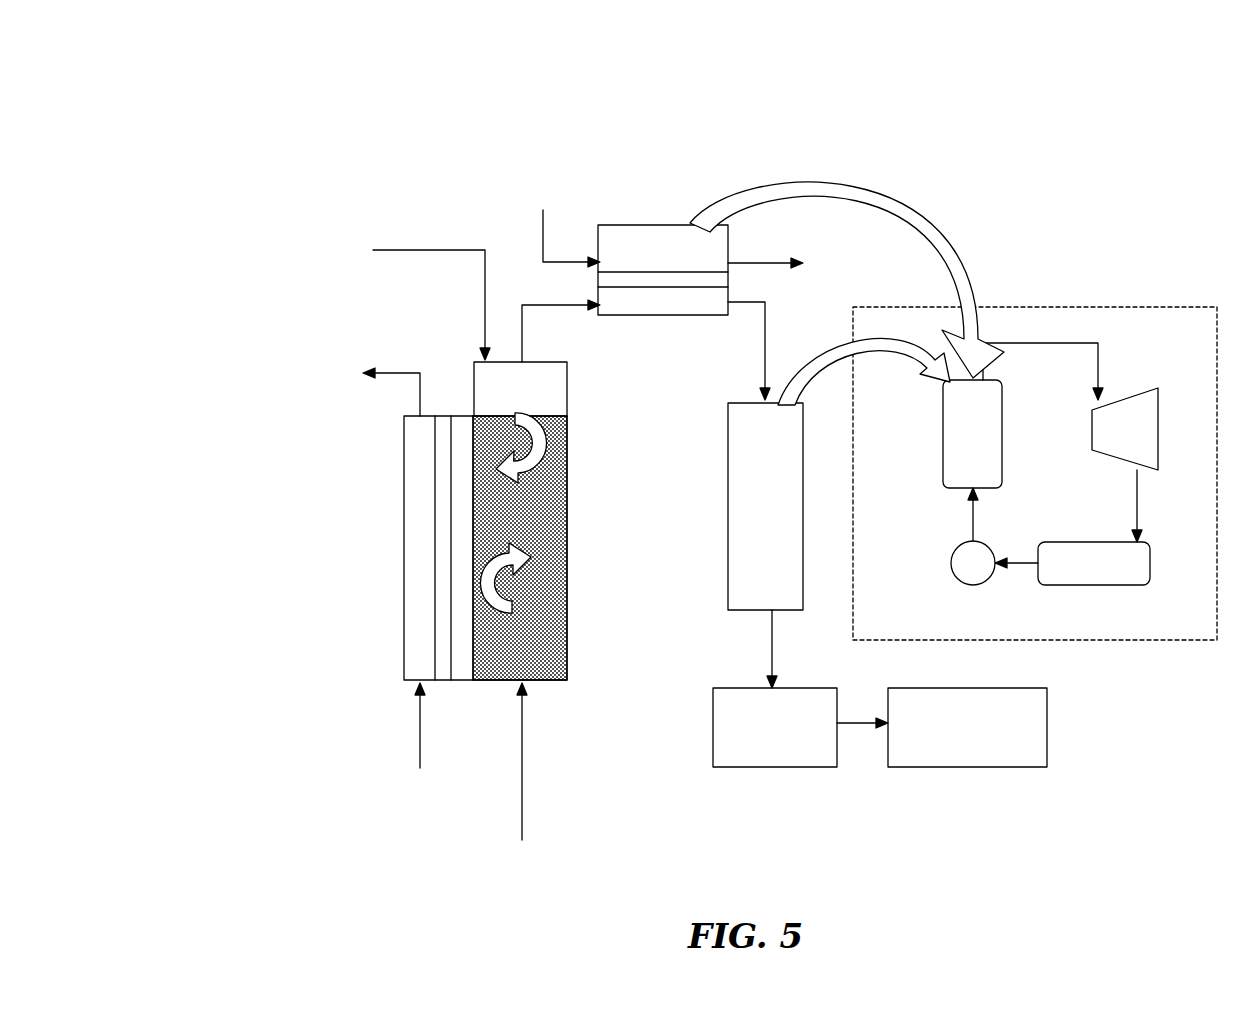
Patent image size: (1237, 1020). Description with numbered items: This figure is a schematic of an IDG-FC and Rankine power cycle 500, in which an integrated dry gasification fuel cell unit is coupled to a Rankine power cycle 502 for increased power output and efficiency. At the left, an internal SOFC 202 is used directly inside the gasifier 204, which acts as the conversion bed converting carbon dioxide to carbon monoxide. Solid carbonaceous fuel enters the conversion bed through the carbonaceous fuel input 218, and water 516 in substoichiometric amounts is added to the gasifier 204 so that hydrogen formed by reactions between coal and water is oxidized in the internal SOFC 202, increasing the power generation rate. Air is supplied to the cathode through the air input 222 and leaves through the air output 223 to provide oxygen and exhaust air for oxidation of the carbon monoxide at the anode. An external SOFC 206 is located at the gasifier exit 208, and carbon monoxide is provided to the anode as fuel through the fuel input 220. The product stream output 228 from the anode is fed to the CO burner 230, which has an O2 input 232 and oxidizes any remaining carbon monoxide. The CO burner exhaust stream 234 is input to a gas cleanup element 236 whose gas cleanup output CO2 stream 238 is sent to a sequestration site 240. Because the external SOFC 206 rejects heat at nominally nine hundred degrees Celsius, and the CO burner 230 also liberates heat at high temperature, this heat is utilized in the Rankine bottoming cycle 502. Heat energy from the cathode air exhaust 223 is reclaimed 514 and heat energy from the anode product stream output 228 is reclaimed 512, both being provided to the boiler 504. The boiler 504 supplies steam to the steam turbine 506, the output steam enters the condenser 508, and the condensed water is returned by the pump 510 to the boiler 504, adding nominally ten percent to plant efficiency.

The IDG-FC and Rankine power cycle 500 is at (250, 108).
The internal SOFC 202 is at (370, 529).
The gasifier 204 is at (567, 572).
The external SOFC bundle 206 is at (648, 204).
The gasifier exit 208 is at (535, 362).
The carbonaceous fuel input 218 is at (375, 248).
The fuel input 220 is at (565, 300).
The air input 222 is at (540, 226).
The air output 223 is at (390, 372).
The product stream output 228 is at (771, 305).
The CO burner 230 is at (803, 503).
The O2 input 232 is at (716, 413).
The CO burner exhaust stream 234 is at (778, 662).
The gas cleanup element 236 is at (740, 688).
The gas cleanup output CO2 stream 238 is at (850, 720).
The sequestration site 240 is at (1048, 745).
The Rankine power cycle 502 is at (1115, 285).
The boiler 504 is at (1003, 418).
The steam turbine 506 is at (1122, 402).
The condenser 508 is at (1065, 540).
The pump 510 is at (986, 545).
The reclaimed anode heat energy 512 is at (790, 395).
The reclaimed cathode heat energy 514 is at (955, 275).
The water 516 is at (522, 730).